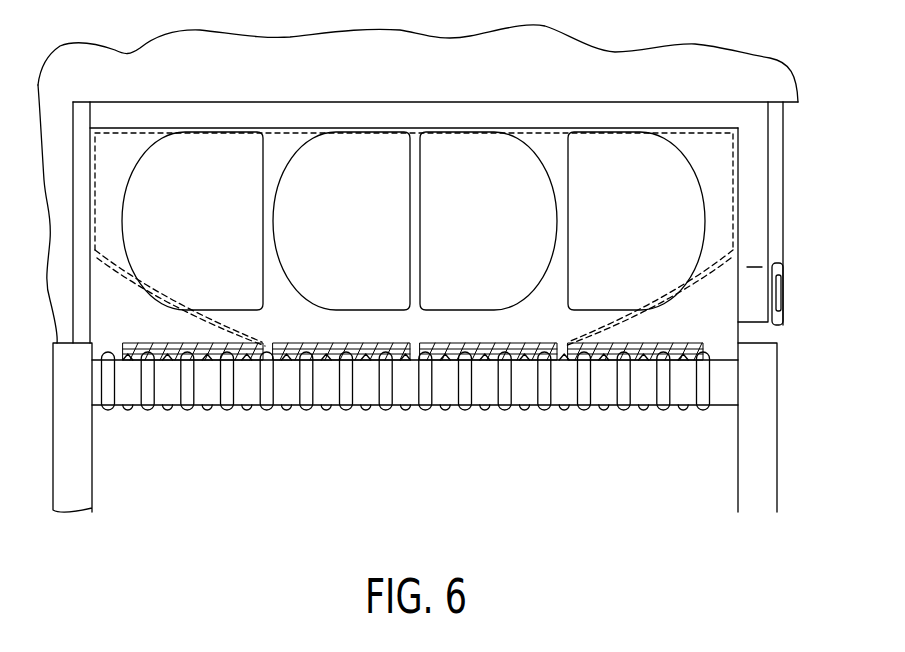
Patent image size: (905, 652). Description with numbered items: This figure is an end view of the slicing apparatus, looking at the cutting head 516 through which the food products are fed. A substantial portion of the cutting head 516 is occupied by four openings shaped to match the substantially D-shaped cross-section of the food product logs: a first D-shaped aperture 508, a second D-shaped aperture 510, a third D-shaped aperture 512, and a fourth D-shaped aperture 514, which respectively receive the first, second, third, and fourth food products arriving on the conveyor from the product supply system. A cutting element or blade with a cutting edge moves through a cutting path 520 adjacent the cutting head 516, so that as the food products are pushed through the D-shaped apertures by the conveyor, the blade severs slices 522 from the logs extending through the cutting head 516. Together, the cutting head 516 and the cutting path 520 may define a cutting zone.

The first D-shaped aperture 508 is at (233, 147).
The second D-shaped aperture 510 is at (372, 147).
The third D-shaped aperture 512 is at (457, 147).
The fourth D-shaped aperture 514 is at (600, 147).
The cutting head 516 is at (703, 322).
The cutting path 520 is at (686, 276).
The slices 522 is at (121, 128).